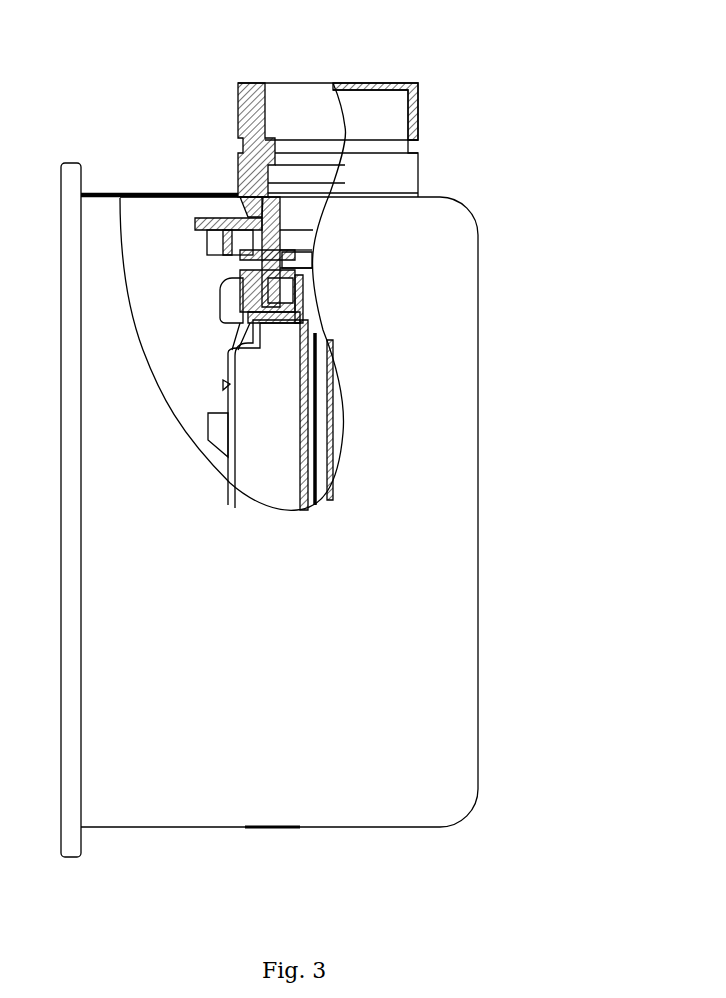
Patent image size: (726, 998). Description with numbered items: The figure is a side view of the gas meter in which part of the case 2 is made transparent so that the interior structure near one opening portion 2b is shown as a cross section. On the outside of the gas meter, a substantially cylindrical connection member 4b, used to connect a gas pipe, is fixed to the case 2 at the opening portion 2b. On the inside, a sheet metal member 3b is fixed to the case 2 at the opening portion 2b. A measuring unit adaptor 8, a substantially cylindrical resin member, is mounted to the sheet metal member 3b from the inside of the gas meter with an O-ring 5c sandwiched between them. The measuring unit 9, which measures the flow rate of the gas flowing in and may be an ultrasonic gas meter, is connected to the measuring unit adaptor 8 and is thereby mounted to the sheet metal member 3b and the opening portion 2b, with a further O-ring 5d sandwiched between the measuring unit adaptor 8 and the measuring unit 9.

The case 2 is at (380, 800).
The opening portion 2b is at (330, 193).
The connection member 4b is at (258, 88).
The O-ring 5c is at (229, 192).
The O-ring 5d is at (220, 292).
The sheet metal member 3b is at (231, 205).
The measuring unit adaptor 8 is at (268, 233).
The measuring unit 9 is at (285, 403).